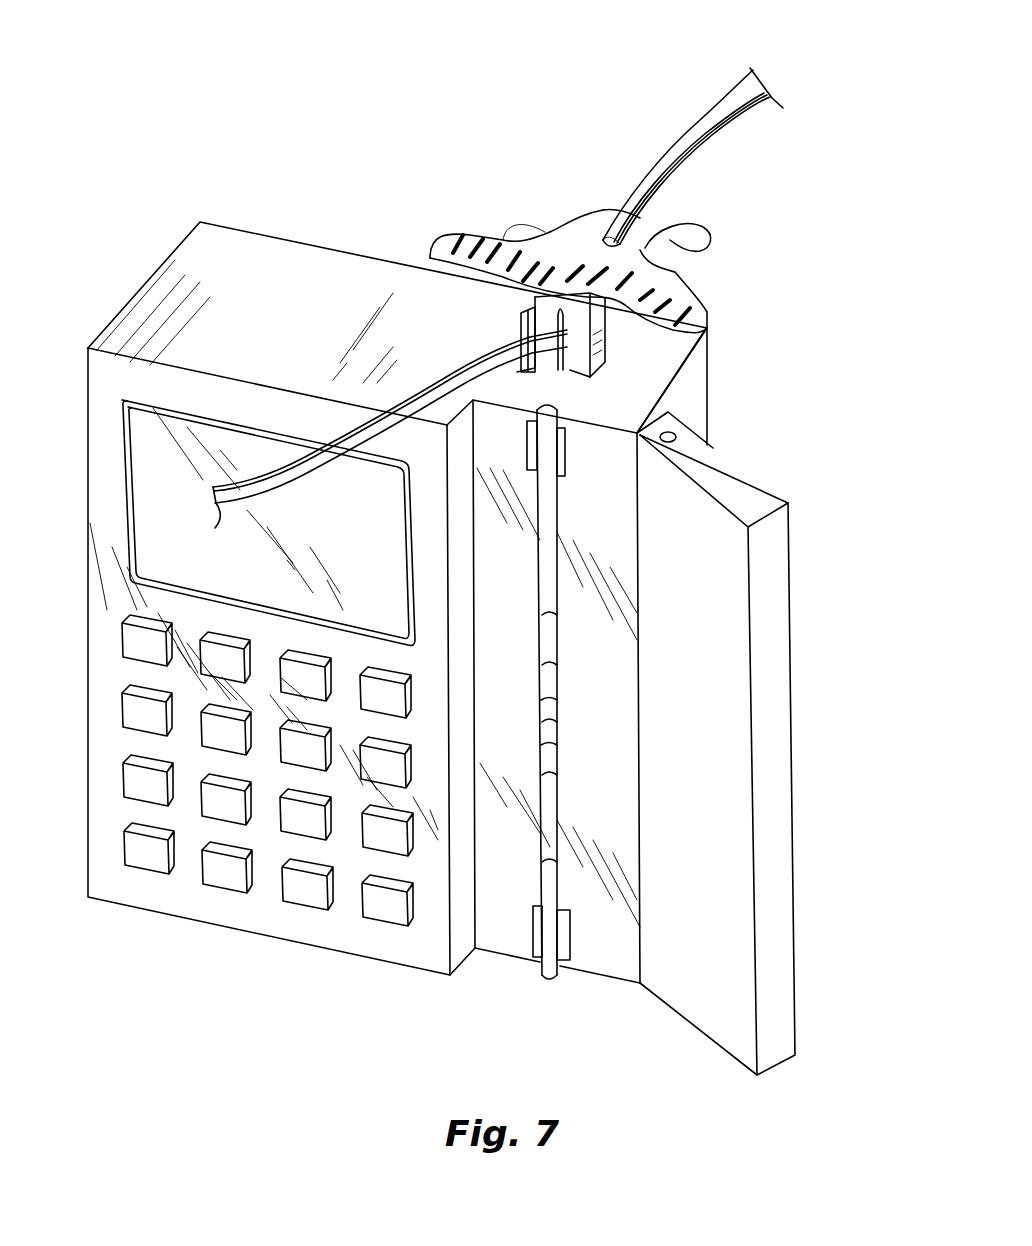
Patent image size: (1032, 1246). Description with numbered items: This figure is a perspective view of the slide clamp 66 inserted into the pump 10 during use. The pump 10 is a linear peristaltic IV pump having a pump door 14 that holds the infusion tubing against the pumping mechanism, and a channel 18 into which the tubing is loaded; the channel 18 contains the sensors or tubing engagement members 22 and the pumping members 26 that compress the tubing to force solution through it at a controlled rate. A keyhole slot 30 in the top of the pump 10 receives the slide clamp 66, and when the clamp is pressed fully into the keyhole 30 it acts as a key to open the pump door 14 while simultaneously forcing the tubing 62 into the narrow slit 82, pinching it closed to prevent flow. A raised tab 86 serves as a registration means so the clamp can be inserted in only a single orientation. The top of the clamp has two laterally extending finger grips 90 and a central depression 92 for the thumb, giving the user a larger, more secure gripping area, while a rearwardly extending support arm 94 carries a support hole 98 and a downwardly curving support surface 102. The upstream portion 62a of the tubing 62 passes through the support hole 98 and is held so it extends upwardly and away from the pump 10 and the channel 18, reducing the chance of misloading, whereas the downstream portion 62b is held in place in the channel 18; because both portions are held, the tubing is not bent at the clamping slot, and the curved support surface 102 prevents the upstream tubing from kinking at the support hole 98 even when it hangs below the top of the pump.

The pump 10 is at (230, 257).
The pump door 14 is at (705, 618).
The channel 18 is at (552, 862).
The tubing engagement members 22 is at (565, 455).
The pumping members 26 is at (553, 700).
The keyhole slot 30 is at (601, 373).
The tubing 62 is at (660, 285).
The upstream portion of the tubing 62a is at (727, 110).
The downstream portion of the tubing 62b is at (282, 485).
The slide clamp 66 is at (553, 306).
The narrow slit 82 is at (597, 315).
The raised tab 86 is at (533, 335).
The finger grips 90 is at (500, 237).
The central depression 92 is at (573, 257).
The support arm 94 is at (618, 212).
The support hole 98 is at (618, 205).
The curved support surface 102 is at (690, 242).